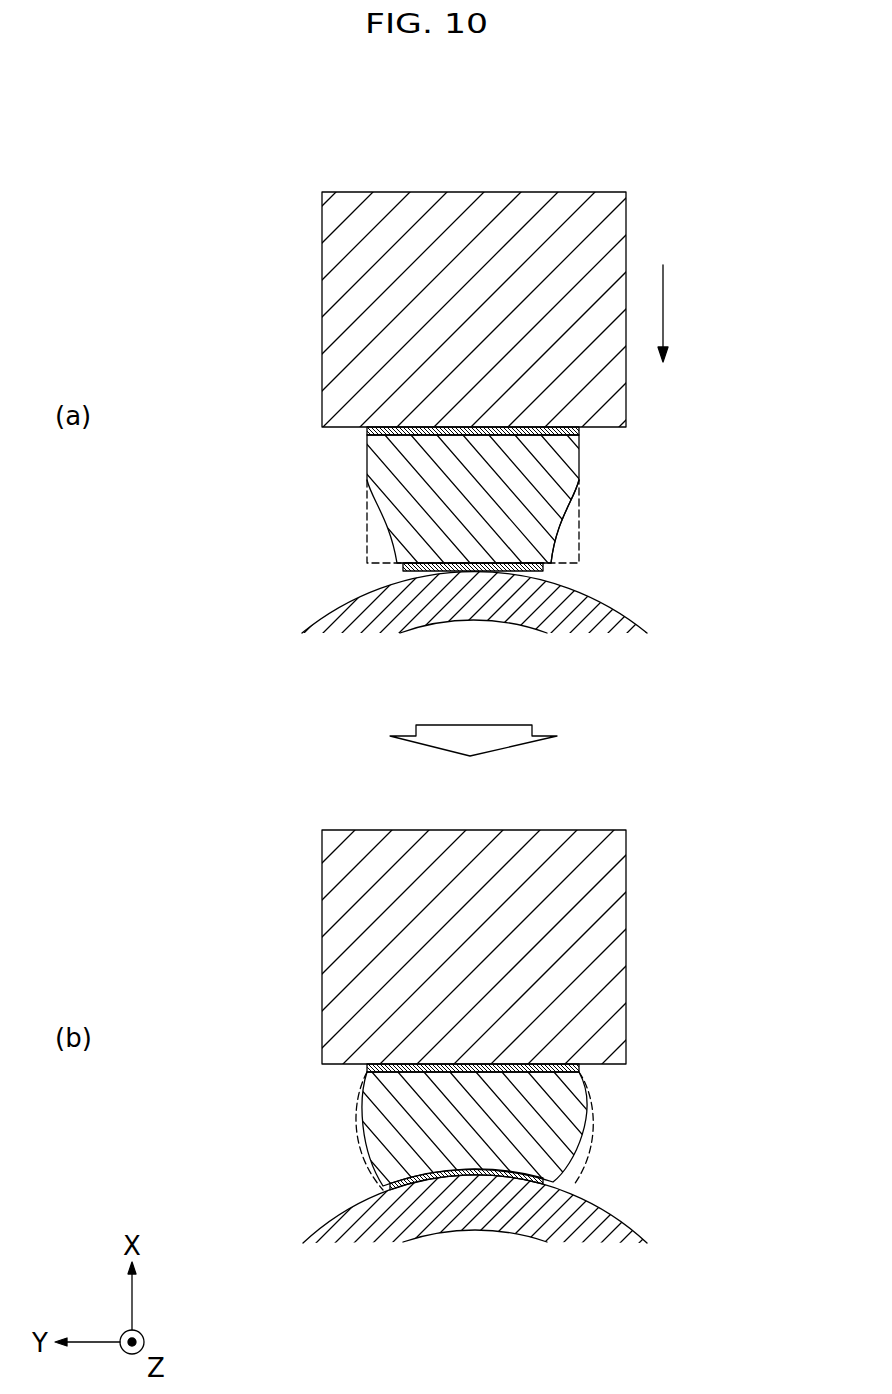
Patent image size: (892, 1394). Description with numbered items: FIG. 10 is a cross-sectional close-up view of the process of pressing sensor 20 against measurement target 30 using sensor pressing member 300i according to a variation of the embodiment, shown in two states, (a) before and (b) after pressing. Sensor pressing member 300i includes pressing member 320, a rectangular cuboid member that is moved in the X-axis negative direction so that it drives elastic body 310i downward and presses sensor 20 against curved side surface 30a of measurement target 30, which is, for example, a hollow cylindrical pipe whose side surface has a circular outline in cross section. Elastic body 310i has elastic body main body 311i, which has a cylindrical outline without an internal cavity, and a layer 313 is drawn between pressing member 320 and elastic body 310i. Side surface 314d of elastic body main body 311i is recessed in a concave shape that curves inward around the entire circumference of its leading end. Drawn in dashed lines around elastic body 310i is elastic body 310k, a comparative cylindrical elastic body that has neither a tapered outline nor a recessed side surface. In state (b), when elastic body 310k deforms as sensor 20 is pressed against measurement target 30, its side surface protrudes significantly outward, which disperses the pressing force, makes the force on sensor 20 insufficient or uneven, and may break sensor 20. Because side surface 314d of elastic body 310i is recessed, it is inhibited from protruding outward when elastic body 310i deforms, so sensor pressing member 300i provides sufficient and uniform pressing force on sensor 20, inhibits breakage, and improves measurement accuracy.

The sensor pressing member 300i is at (277, 277).
The pressing member 320 is at (322, 305).
The adhesive layer 313 is at (582, 432).
The elastic body 310i is at (460, 817).
The elastic body main body 311i is at (580, 471).
The side surface 314d is at (555, 540).
The elastic body 310k is at (367, 517).
The sensor 20 is at (400, 570).
The measurement target 30 is at (517, 901).
The side surface 30a is at (605, 605).